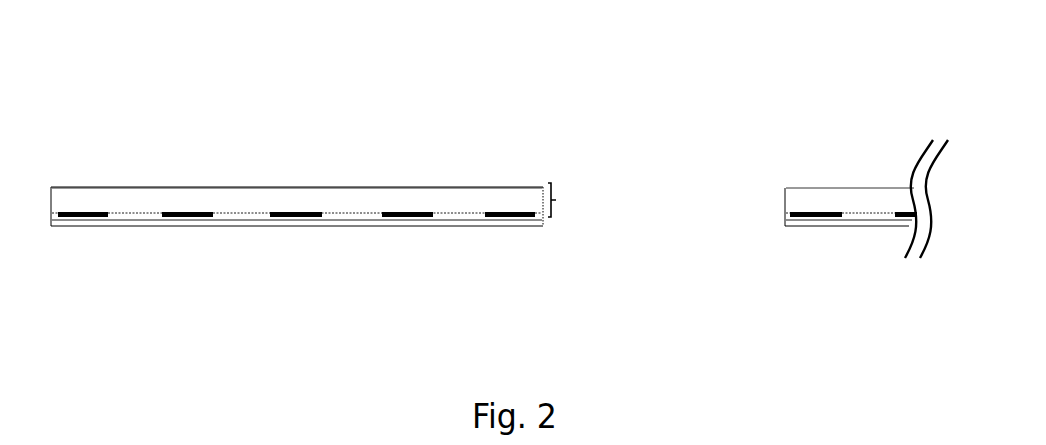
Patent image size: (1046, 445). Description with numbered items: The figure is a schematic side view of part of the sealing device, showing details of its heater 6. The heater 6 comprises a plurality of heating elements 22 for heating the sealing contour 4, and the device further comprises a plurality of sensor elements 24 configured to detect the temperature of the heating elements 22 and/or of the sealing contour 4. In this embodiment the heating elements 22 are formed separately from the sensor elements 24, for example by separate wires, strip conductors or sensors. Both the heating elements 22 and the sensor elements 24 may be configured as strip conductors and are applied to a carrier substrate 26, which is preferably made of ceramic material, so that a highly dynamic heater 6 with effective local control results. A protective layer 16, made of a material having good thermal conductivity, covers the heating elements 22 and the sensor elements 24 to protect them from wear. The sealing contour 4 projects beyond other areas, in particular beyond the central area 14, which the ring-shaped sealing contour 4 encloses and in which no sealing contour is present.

The sealing contour 4 is at (557, 222).
The heater 6 is at (566, 200).
The central area 14 is at (680, 134).
The protective layer 16 is at (248, 225).
The heating elements 22 is at (86, 212).
The sensor elements 24 is at (187, 218).
The carrier substrate 26 is at (205, 197).